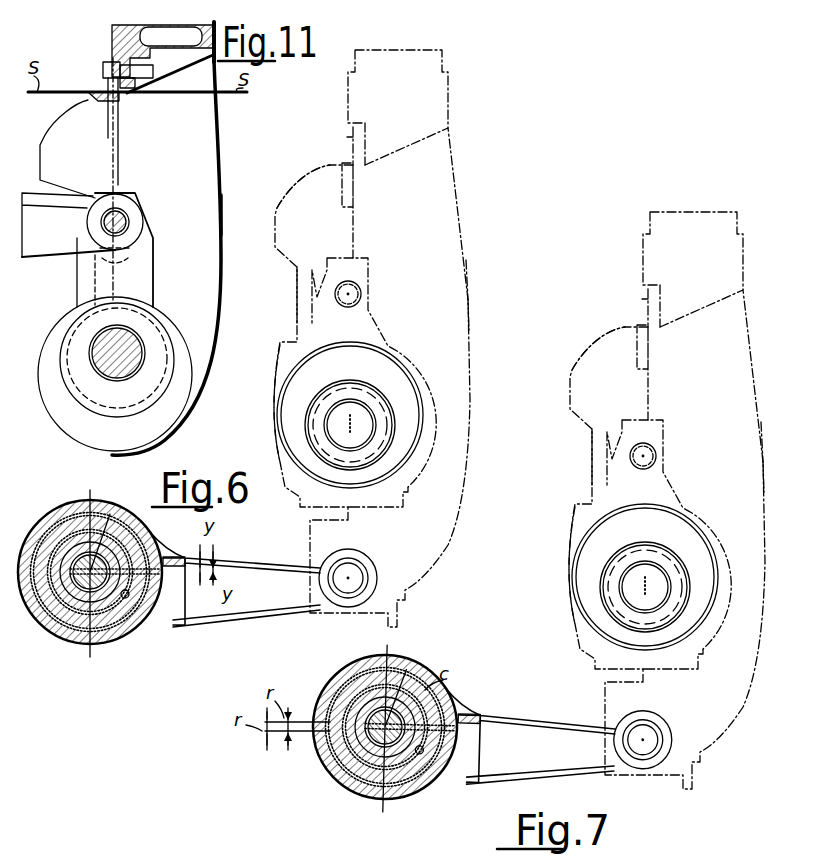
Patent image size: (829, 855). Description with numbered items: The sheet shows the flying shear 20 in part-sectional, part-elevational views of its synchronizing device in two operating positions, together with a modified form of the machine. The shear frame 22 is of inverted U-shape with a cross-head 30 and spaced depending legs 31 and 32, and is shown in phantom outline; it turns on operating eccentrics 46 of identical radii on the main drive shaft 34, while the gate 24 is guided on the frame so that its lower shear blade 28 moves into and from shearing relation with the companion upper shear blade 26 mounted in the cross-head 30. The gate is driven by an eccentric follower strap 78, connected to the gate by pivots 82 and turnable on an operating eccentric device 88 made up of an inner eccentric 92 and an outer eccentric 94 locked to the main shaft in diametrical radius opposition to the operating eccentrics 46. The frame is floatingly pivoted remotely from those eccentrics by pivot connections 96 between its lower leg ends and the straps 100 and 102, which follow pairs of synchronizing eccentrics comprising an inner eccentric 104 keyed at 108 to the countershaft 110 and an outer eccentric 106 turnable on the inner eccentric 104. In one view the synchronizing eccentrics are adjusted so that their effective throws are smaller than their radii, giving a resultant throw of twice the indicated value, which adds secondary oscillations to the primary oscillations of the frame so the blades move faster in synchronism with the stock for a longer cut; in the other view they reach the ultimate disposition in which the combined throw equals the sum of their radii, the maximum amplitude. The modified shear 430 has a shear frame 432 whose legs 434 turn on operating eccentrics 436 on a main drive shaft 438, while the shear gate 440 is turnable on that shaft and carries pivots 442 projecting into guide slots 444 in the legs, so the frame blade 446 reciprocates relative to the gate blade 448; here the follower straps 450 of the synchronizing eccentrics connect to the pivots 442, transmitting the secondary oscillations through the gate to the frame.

In FIG. 6, the shear 20 is at (330, 157).
In FIG. 7, the shear 20 is at (598, 322).
In FIG. 6, the frame 22 is at (458, 215).
In FIG. 7, the frame 22 is at (697, 539).
In FIG. 6, the gate 24 is at (274, 253).
In FIG. 7, the gate 24 is at (584, 498).
In FIG. 6, the shear blade 26 is at (349, 137).
In FIG. 7, the shear blade 26 is at (629, 293).
In FIG. 6, the shear blade 28 is at (353, 186).
In FIG. 7, the shear blade 28 is at (664, 352).
In FIG. 6, the cross-head 30 is at (428, 50).
In FIG. 7, the cross-head 30 is at (702, 230).
In FIG. 6, the leg 31 is at (462, 284).
In FIG. 7, the leg 31 is at (771, 439).
In FIG. 6, the leg 32 is at (499, 303).
In FIG. 7, the leg 32 is at (780, 463).
In FIG. 6, the main drive shaft 34 is at (340, 426).
In FIG. 7, the main drive shaft 34 is at (635, 588).
In FIG. 6, the operating eccentrics 46 is at (314, 456).
In FIG. 7, the operating eccentrics 46 is at (592, 617).
In FIG. 6, the eccentric follower strap 78 is at (262, 404).
In FIG. 7, the eccentric follower strap 78 is at (534, 565).
In FIG. 6, the pivots 82 is at (350, 295).
In FIG. 7, the pivots 82 is at (645, 457).
In FIG. 6, the operating eccentric device 88 is at (300, 394).
In FIG. 7, the operating eccentric device 88 is at (624, 534).
In FIG. 6, the inner eccentric 92 is at (343, 382).
In FIG. 7, the inner eccentric 92 is at (639, 545).
In FIG. 6, the outer eccentric 94 is at (388, 372).
In FIG. 7, the outer eccentric 94 is at (683, 530).
In FIG. 6, the pivot connections 96 is at (348, 598).
In FIG. 7, the pivot connections 96 is at (642, 756).
In FIG. 6, the strap 100 is at (234, 576).
In FIG. 7, the strap 100 is at (530, 735).
In FIG. 6, the strap 102 is at (115, 617).
In FIG. 7, the strap 102 is at (408, 777).
In FIG. 6, the inner eccentric 104 is at (89, 560).
In FIG. 7, the inner eccentric 104 is at (371, 733).
In FIG. 6, the outer eccentric 106 is at (90, 586).
In FIG. 7, the outer eccentric 106 is at (384, 741).
In FIG. 6, the key 108 is at (74, 590).
In FIG. 7, the key 108 is at (401, 753).
In FIG. 6, the countershaft 110 is at (108, 568).
In FIG. 7, the countershaft 110 is at (403, 725).
In FIG. 11, the modified shear 430 is at (83, 58).
In FIG. 11, the shear frame 432 is at (219, 129).
In FIG. 11, the legs 434 is at (210, 214).
In FIG. 11, the operating eccentrics 436 is at (128, 417).
In FIG. 11, the main drive shaft 438 is at (128, 372).
In FIG. 11, the shear gate 440 is at (157, 280).
In FIG. 11, the pivots 442 is at (127, 220).
In FIG. 11, the guide slots 444 is at (134, 247).
In FIG. 11, the blade 446 is at (110, 92).
In FIG. 11, the blade 448 is at (120, 97).
In FIG. 11, the follower straps 450 is at (58, 245).